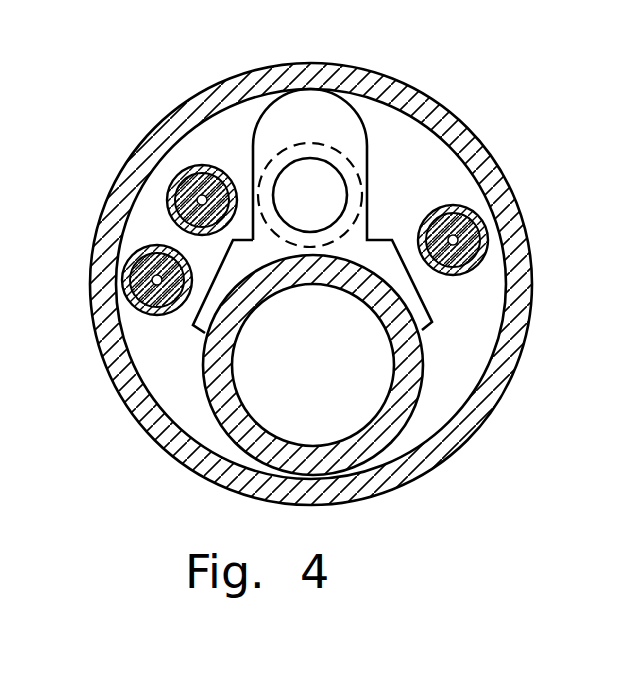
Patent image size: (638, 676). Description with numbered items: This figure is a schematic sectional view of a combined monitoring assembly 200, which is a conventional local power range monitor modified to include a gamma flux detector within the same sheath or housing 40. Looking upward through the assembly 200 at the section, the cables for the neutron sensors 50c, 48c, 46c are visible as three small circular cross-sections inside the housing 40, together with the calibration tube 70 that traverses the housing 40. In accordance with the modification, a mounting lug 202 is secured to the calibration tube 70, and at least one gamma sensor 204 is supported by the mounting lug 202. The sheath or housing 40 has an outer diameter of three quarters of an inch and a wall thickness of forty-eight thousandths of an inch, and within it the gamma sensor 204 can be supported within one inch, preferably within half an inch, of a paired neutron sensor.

The combined monitoring assembly 200 is at (321, 260).
The housing 40 is at (485, 420).
The calibration tube 70 is at (420, 385).
The mounting lug 202 is at (367, 127).
The gamma sensor 204 is at (310, 150).
The cable for neutron sensor 50c is at (177, 175).
The cable for neutron sensor 48c is at (155, 316).
The cable for neutron sensor 46c is at (470, 209).